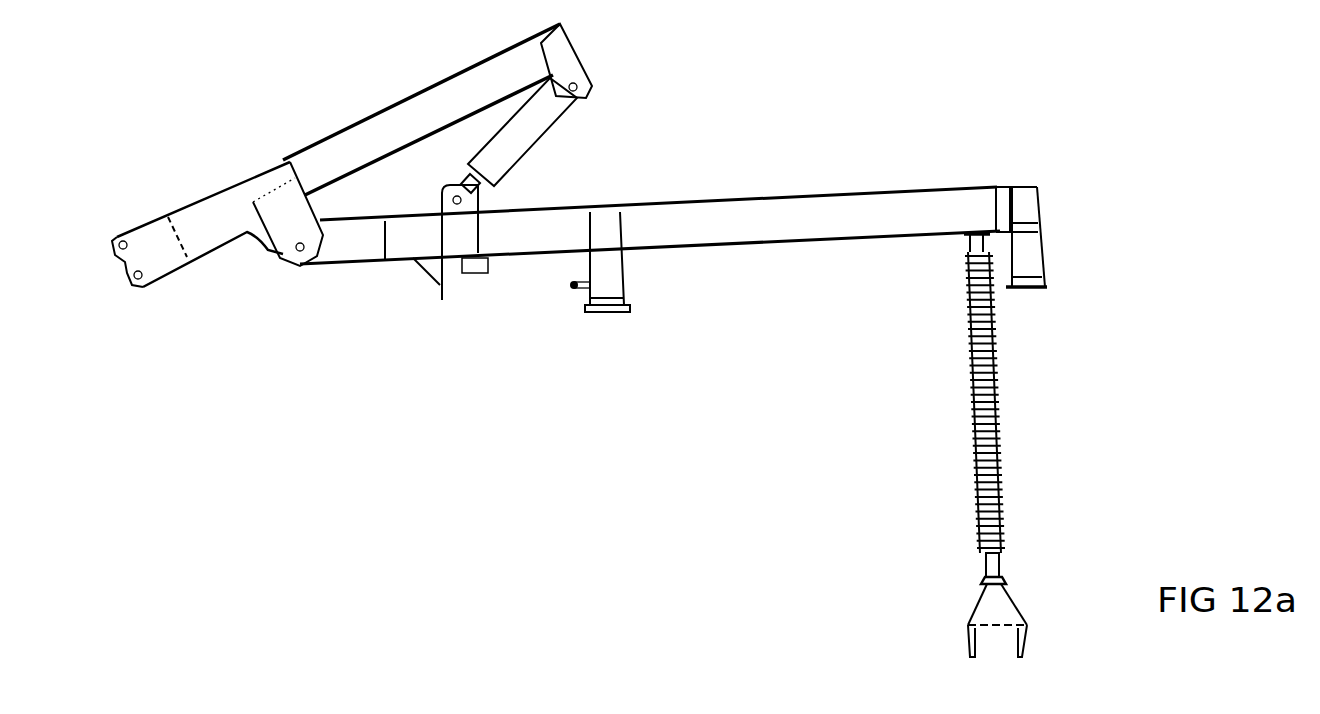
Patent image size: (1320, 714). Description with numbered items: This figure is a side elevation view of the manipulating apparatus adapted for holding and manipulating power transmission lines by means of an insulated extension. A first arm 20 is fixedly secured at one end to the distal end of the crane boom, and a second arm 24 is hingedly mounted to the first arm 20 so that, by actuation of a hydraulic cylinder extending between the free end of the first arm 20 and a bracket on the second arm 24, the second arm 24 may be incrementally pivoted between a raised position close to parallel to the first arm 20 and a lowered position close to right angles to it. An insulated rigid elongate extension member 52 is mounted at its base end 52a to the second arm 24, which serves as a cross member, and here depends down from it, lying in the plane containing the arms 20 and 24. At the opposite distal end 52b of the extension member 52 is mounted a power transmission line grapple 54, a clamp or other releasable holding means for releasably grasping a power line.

The first arm 20 is at (413, 90).
The second arm 24 is at (815, 200).
The base end 52a is at (992, 187).
The insulated rigid elongate extension member 52 is at (1002, 445).
The distal end 52b is at (1008, 575).
The power transmission line grapple 54 is at (1018, 608).